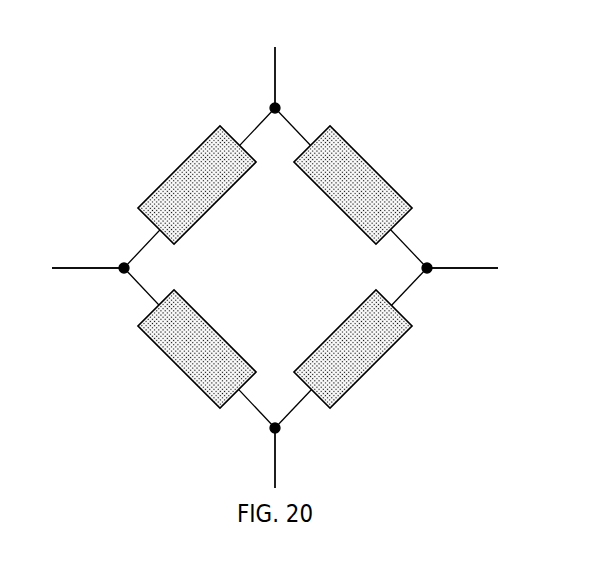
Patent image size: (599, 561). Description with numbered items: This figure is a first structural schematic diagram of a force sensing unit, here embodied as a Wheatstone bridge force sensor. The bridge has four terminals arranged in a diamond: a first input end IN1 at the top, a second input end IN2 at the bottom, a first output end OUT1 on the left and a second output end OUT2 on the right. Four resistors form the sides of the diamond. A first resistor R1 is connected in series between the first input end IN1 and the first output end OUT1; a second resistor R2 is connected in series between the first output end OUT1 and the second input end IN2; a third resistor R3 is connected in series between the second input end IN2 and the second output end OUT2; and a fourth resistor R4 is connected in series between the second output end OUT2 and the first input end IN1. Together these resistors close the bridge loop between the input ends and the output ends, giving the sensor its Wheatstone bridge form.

The first resistor R1 is at (197, 185).
The second resistor R2 is at (197, 349).
The third resistor R3 is at (353, 349).
The fourth resistor R4 is at (353, 185).
The first input end IN1 is at (297, 77).
The second input end IN2 is at (296, 458).
The first output end OUT1 is at (88, 256).
The second output end OUT2 is at (462, 256).